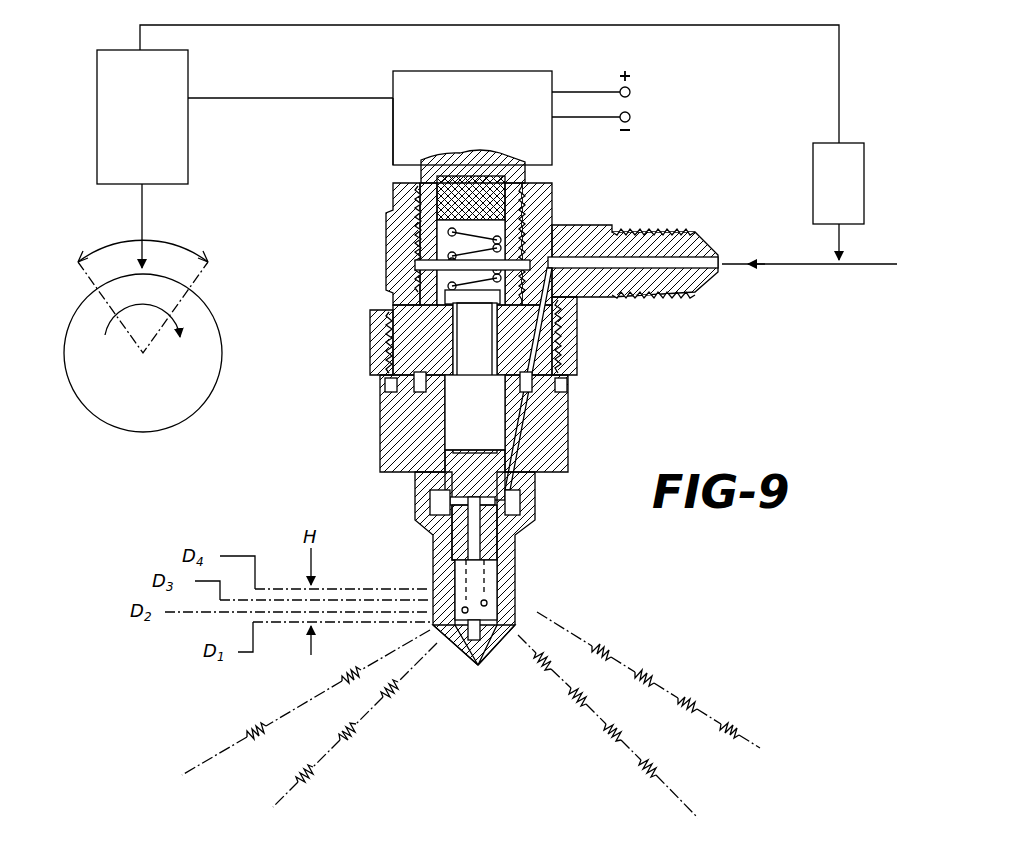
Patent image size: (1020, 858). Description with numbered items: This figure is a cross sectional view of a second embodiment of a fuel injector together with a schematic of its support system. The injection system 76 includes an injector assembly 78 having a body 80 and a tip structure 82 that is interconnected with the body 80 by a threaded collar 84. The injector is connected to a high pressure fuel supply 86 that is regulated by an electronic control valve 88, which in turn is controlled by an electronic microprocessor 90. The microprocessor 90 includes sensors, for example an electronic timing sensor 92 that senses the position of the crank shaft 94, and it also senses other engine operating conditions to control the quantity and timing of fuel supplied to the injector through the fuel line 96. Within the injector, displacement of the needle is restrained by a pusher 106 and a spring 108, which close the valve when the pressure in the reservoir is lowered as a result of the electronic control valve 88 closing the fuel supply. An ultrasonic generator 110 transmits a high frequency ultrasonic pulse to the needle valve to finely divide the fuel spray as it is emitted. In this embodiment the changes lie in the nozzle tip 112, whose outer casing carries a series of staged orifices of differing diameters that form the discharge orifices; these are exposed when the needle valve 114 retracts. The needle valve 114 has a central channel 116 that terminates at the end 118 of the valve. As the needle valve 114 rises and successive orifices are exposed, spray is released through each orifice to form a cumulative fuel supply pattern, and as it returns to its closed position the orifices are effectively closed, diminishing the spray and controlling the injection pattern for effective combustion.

The injection system 76 is at (545, 67).
The injector assembly 78 is at (562, 219).
The body 80 is at (385, 243).
The tip structure 82 is at (415, 487).
The threaded collar 84 is at (580, 368).
The high pressure fuel supply 86 is at (885, 265).
The electronic control valve 88 is at (813, 172).
The electronic microprocessor 90 is at (185, 163).
The electronic timing sensor 92 is at (143, 236).
The crank shaft 94 is at (218, 322).
The fuel line 96 is at (722, 270).
The pusher 106 is at (462, 340).
The spring 108 is at (420, 272).
The ultrasonic generator 110 is at (397, 136).
The nozzle tip 112 is at (515, 582).
The needle valve 114 is at (450, 548).
The central channel 116 is at (480, 548).
The end 118 is at (480, 660).